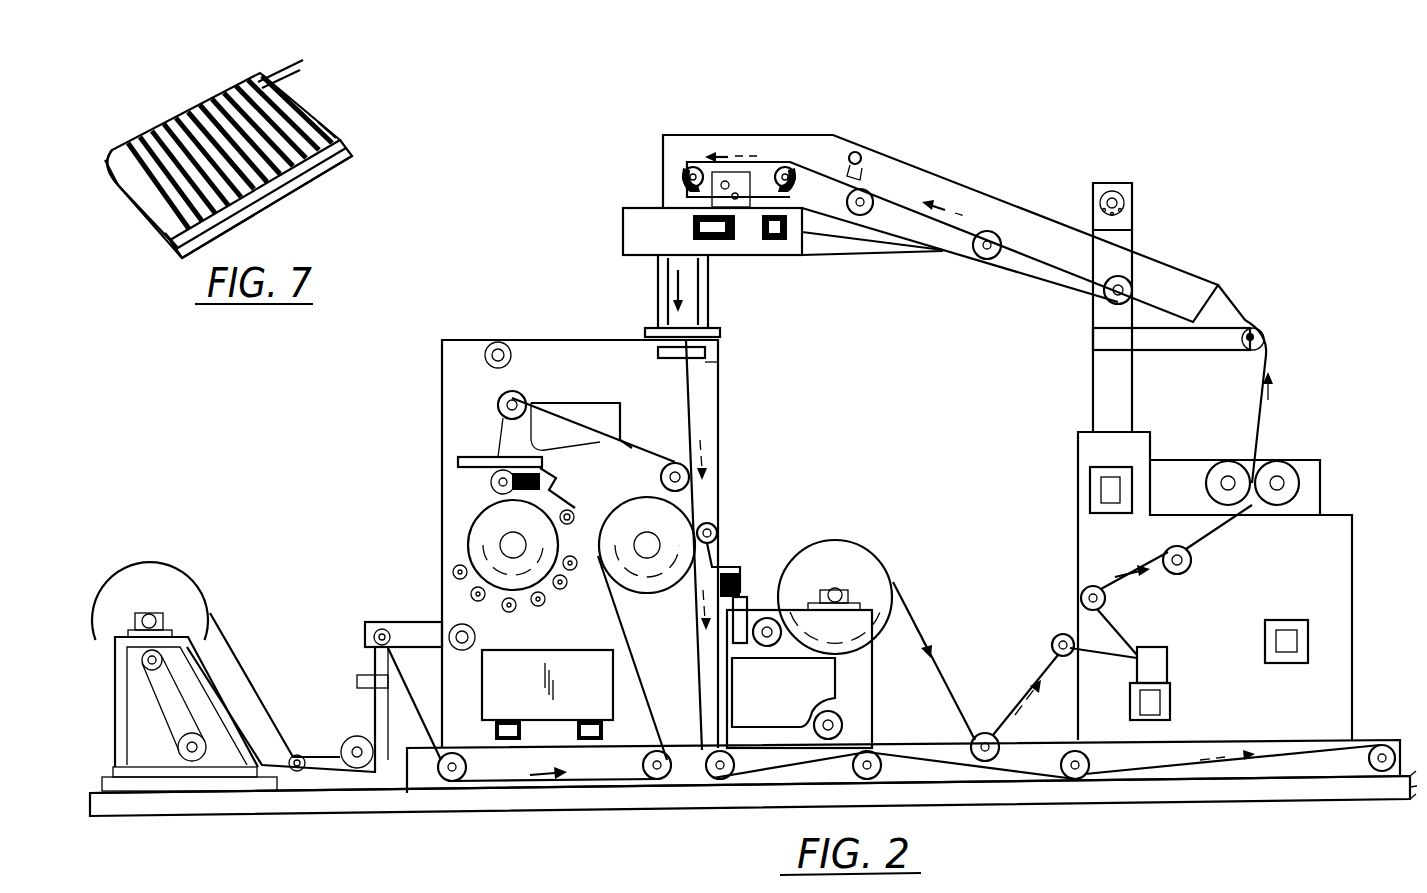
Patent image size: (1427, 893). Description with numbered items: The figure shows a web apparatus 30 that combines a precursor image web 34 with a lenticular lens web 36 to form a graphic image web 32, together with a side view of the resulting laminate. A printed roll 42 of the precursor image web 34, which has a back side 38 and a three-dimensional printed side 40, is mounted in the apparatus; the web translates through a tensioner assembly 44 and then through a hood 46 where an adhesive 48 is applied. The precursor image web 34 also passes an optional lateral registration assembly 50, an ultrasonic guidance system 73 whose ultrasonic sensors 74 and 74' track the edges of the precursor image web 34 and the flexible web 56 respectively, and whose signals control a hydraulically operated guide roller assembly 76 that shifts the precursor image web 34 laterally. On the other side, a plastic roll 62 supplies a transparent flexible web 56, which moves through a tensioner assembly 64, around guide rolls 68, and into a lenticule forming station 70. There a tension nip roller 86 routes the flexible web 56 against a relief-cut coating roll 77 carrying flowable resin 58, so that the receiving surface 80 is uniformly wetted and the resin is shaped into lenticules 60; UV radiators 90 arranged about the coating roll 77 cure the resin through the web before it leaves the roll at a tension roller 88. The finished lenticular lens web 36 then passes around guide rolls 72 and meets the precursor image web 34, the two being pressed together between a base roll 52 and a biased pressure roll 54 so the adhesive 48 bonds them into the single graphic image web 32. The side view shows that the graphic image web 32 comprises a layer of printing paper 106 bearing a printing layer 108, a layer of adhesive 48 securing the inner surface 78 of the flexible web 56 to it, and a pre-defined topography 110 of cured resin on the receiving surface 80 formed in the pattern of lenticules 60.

In FIG. 2, the web apparatus 30 is at (862, 106).
In FIG. 2, the graphic image web 32 is at (700, 677).
In FIG. 7, the precursor image web 34 is at (173, 250).
In FIG. 2, the precursor image web 34 is at (690, 425).
In FIG. 7, the lenticular lens web 36 is at (142, 118).
In FIG. 2, the lenticular lens web 36 is at (572, 415).
In FIG. 2, the back side 38 is at (1253, 413).
In FIG. 2, the 3-D printed side 40 is at (1262, 457).
In FIG. 2, the printed roll 42 is at (837, 540).
In FIG. 2, the tensioner assembly 44 is at (1218, 562).
In FIG. 2, the hood 46 is at (1003, 195).
In FIG. 7, the adhesive 48 is at (342, 140).
In FIG. 2, the adhesive 48 is at (862, 164).
In FIG. 2, the lateral registration assembly 50 is at (758, 124).
In FIG. 2, the base roll 52 is at (669, 584).
In FIG. 2, the biased pressure roll 54 is at (710, 527).
In FIG. 7, the flexible web 56 is at (165, 232).
In FIG. 2, the flexible web 56 is at (266, 713).
In FIG. 7, the flowable resin 58 is at (337, 132).
In FIG. 7, the lenticules 60 is at (298, 67).
In FIG. 2, the plastic roll 62 is at (173, 581).
In FIG. 2, the tensioner assembly 64 is at (381, 792).
In FIG. 2, the guide rolls 68 is at (600, 790).
In FIG. 2, the lenticule forming station 70 is at (448, 513).
In FIG. 2, the guide rolls 72 is at (500, 400).
In FIG. 2, the ultrasonic guidance system 73 is at (722, 362).
In FIG. 2, the ultrasonic sensor 74 is at (736, 343).
In FIG. 2, the ultrasonic sensor 74' is at (373, 697).
In FIG. 2, the guide roller assembly 76 is at (682, 165).
In FIG. 2, the coating roll 77 is at (468, 541).
In FIG. 7, the inner surface 78 is at (170, 240).
In FIG. 7, the receiving surface 80 is at (162, 222).
In FIG. 2, the tension nip roller 86 is at (562, 498).
In FIG. 2, the tension roller 88 is at (458, 478).
In FIG. 2, the UV radiators 90 is at (456, 588).
In FIG. 7, the printing paper 106 is at (305, 173).
In FIG. 7, the printing layer 108 is at (262, 198).
In FIG. 7, the pre-defined topography 110 is at (133, 173).